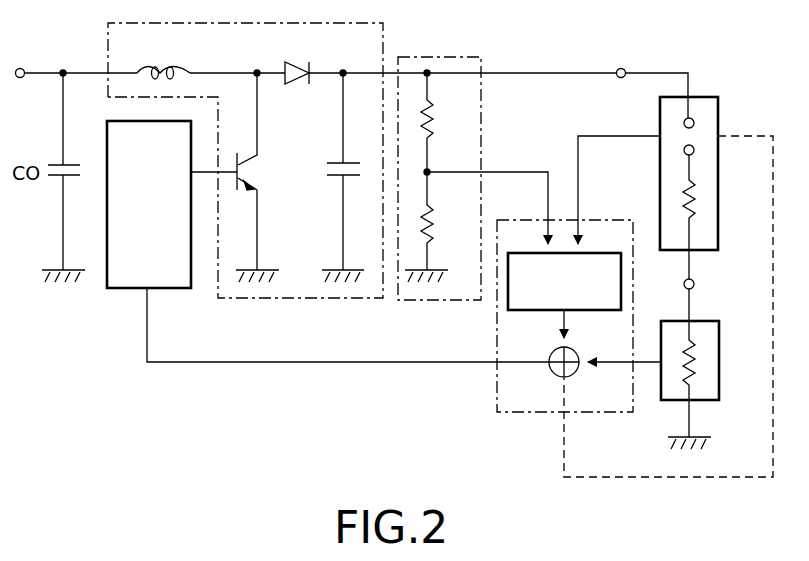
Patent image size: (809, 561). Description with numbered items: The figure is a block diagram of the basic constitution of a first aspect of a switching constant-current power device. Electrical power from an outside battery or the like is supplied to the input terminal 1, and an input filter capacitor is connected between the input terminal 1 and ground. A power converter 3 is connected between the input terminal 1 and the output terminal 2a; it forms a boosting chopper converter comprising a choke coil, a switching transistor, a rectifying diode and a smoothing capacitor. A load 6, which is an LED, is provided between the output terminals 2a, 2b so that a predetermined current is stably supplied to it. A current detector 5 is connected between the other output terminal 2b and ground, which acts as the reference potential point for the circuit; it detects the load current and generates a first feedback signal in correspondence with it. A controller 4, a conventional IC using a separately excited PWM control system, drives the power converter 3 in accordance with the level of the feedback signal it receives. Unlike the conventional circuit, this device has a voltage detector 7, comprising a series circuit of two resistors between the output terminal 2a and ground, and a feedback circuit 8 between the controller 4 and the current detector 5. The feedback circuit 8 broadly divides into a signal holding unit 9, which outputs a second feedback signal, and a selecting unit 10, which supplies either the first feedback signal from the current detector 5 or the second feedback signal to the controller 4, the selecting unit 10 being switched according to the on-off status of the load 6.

The input terminal 1 is at (20, 68).
The output terminal 2a is at (622, 68).
The output terminal 2b is at (695, 284).
The power converter 3 is at (298, 299).
The controller 4 is at (123, 289).
The current detector 5 is at (712, 401).
The load 6 is at (710, 96).
The voltage detector 7 is at (445, 301).
The feedback circuit 8 is at (497, 386).
The signal holding unit 9 is at (522, 311).
The selecting unit 10 is at (553, 372).